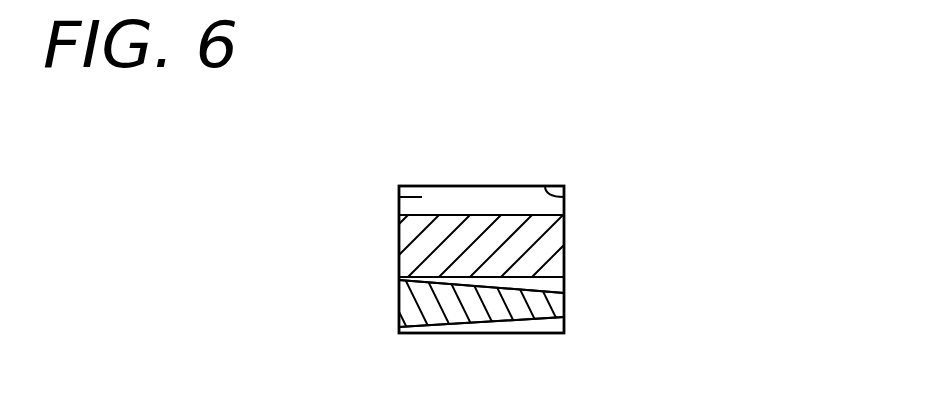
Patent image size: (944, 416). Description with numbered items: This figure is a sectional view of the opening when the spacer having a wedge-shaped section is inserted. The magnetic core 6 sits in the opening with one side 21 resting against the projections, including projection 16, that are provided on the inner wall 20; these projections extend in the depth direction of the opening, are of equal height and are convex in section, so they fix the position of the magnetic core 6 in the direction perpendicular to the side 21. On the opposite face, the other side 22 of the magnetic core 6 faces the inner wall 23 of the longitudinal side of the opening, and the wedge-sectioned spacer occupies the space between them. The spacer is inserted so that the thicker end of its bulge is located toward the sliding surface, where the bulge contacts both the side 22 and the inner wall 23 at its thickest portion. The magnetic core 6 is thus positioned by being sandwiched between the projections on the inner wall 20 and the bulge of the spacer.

The projection 16 is at (399, 197).
The inner wall 20 is at (567, 202).
The side 21 is at (533, 212).
The magnetic core 6 is at (428, 238).
The other side 22 is at (567, 288).
The inner wall 23 is at (567, 322).